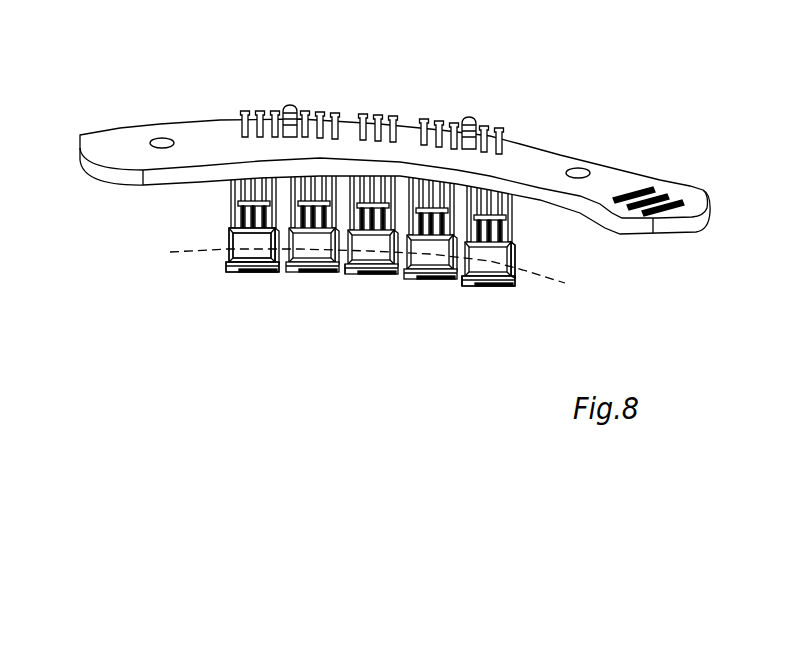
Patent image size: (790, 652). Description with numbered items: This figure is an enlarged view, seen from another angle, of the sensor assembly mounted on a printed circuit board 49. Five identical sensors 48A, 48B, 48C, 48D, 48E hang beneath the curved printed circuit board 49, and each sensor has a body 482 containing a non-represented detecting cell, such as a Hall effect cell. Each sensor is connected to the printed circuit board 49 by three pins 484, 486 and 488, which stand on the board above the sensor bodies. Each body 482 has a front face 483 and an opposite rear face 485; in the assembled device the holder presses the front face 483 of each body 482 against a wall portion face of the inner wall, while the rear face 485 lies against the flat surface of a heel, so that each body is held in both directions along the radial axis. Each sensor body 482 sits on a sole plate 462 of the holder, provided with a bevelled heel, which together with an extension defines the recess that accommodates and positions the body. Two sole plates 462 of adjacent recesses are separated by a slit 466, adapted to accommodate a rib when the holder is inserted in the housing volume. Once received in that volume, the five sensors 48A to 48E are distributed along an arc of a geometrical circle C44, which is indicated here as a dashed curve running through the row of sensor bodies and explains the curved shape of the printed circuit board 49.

The printed circuit board 49 is at (622, 181).
The body 482 is at (228, 229).
The front face 483 is at (259, 247).
The pin 484 is at (245, 110).
The rear face 485 is at (527, 251).
The pin 486 is at (262, 110).
The pin 488 is at (281, 106).
The sole plate 462 is at (261, 275).
The slit 466 is at (340, 280).
The sensor 48A is at (224, 272).
The sensor 48B is at (297, 272).
The sensor 48C is at (363, 274).
The sensor 48D is at (415, 279).
The sensor 48E is at (482, 290).
The geometrical circle C44 is at (383, 275).